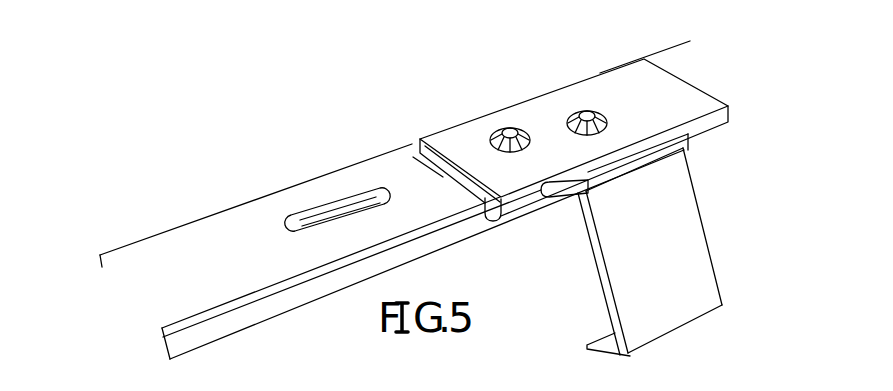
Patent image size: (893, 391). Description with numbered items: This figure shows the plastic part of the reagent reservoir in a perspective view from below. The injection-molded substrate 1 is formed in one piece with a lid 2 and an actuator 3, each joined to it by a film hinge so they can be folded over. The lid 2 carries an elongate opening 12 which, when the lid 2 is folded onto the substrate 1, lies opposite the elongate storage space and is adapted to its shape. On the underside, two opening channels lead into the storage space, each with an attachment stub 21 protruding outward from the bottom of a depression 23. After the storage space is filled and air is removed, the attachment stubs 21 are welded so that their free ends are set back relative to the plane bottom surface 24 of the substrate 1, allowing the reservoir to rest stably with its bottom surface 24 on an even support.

The substrate 1 is at (703, 93).
The lid 2 is at (220, 211).
The actuator 3 is at (703, 218).
The elongate opening 12 is at (334, 211).
The attachment stub 21 is at (586, 112).
The depression 23 is at (495, 130).
The bottom surface 24 is at (638, 88).